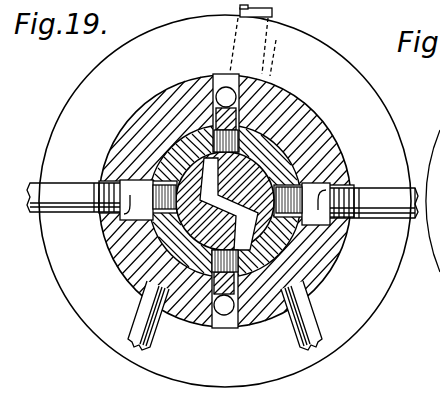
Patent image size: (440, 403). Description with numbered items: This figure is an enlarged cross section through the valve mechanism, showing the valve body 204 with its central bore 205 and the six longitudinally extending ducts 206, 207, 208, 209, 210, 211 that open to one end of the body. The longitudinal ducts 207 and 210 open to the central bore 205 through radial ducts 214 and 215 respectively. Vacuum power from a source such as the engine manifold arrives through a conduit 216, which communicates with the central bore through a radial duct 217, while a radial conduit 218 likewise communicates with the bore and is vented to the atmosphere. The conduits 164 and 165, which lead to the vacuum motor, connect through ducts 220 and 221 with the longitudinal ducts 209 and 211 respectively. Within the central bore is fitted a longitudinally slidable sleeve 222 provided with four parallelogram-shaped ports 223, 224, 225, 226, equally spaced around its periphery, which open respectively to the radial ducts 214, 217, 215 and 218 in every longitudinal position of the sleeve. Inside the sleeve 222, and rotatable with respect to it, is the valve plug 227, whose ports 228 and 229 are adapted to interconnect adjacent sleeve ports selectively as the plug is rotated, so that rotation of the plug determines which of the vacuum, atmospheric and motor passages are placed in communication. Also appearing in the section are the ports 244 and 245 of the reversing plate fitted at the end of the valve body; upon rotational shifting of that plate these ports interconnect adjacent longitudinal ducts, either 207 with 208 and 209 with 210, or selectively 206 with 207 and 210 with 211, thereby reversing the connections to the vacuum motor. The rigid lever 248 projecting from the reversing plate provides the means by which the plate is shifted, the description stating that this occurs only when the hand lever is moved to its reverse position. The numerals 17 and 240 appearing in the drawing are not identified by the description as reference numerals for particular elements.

The housing 17 is at (80, 328).
The conduit 164 is at (133, 336).
The conduit 165 is at (318, 338).
The valve body 204 is at (302, 130).
The central bore 205 is at (262, 108).
The longitudinal duct 206 is at (160, 106).
The longitudinal duct 207 is at (220, 88).
The longitudinal duct 208 is at (300, 104).
The longitudinal duct 209 is at (150, 279).
The longitudinal duct 210 is at (217, 330).
The longitudinal duct 211 is at (275, 285).
The radial duct 214 is at (240, 108).
The radial duct 215 is at (242, 316).
The conduit 216 is at (403, 192).
The radial duct 217 is at (356, 218).
The radial conduit 218 is at (110, 213).
The duct 220 is at (152, 304).
The duct 221 is at (300, 311).
The longitudinally slidable sleeve 222 is at (320, 152).
The sleeve port 223 is at (214, 126).
The sleeve port 224 is at (345, 182).
The sleeve port 225 is at (163, 236).
The sleeve port 226 is at (120, 183).
The valve plug 227 is at (296, 172).
The plug port 228 is at (268, 234).
The plug port 229 is at (165, 163).
The base 240 is at (225, 399).
The reversing plate port 244 is at (268, 108).
The reversing plate port 245 is at (187, 322).
The rigid lever 248 is at (272, 13).